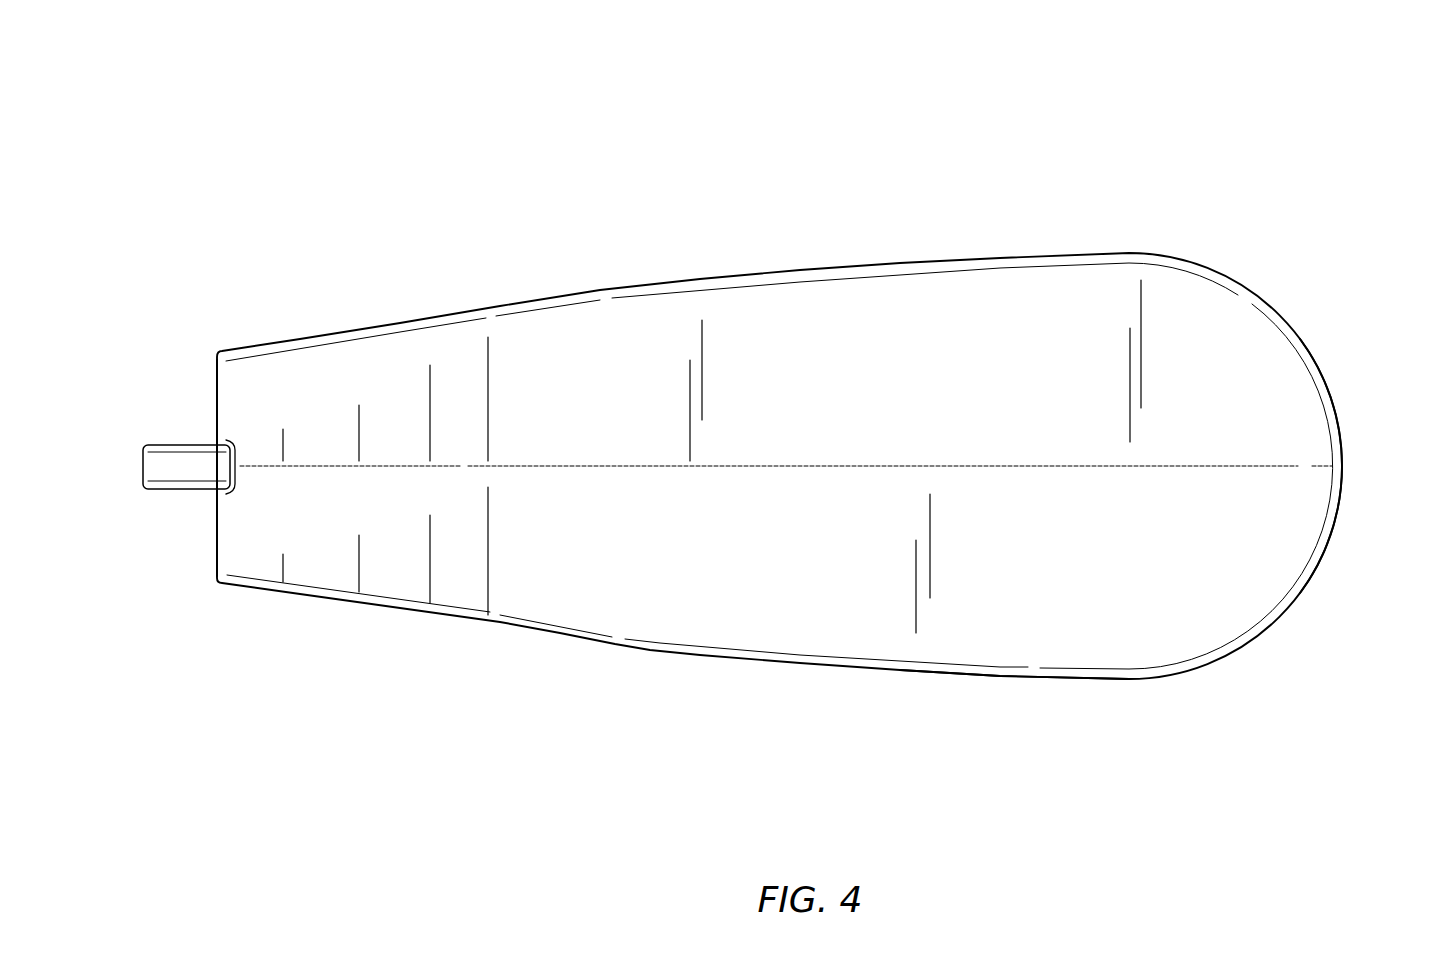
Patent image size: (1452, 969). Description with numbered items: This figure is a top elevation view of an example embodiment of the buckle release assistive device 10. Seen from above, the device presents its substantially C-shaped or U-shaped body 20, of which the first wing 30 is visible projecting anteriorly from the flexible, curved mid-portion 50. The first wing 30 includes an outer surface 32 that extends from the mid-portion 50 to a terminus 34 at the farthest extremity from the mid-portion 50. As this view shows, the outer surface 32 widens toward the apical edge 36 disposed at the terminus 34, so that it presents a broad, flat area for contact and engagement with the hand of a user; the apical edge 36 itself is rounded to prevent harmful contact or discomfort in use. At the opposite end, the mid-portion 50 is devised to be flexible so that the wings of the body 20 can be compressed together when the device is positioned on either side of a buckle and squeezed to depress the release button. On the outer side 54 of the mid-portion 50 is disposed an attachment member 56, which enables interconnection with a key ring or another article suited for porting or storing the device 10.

The buckle release assistive device 10 is at (1263, 100).
The body 20 is at (895, 262).
The first wing 30 is at (793, 313).
The outer surface 32 is at (845, 424).
The terminus 34 is at (1023, 570).
The apical edge 36 is at (1345, 463).
The mid-portion 50 is at (207, 535).
The outer side 54 is at (215, 408).
The attachment member 56 is at (143, 466).